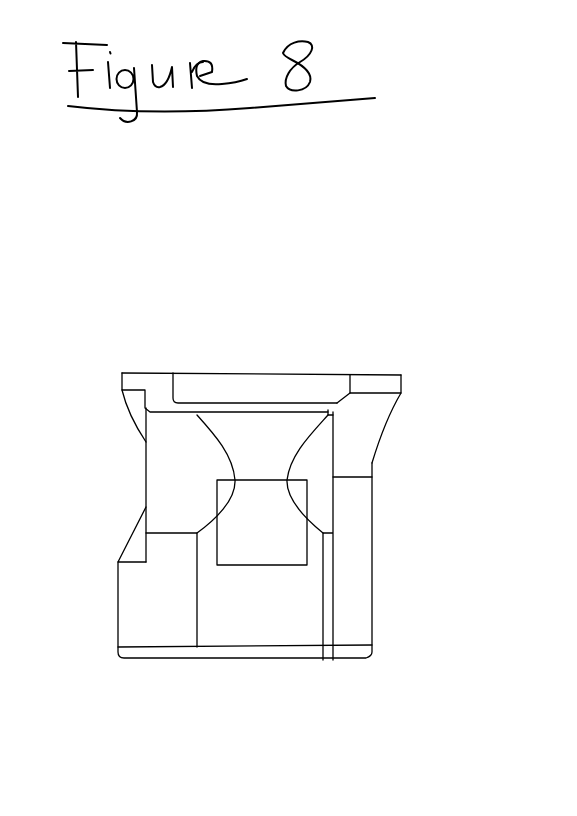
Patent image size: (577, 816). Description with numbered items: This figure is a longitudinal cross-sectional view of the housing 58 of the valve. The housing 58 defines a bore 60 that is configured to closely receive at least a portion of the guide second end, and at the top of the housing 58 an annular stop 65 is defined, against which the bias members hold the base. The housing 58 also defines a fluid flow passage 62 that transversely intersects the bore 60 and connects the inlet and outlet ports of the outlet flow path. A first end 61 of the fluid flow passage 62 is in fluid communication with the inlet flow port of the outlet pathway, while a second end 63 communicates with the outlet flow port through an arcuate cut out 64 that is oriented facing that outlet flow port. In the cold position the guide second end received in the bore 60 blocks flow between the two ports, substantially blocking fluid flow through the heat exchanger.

The housing 58 is at (447, 708).
The bore 60 is at (233, 755).
The first end of the fluid flow passage 61 is at (148, 415).
The fluid flow passage 62 is at (470, 450).
The second end of the fluid flow passage 63 is at (397, 393).
The arcuate cut out 64 is at (432, 595).
The annular stop 65 is at (190, 410).